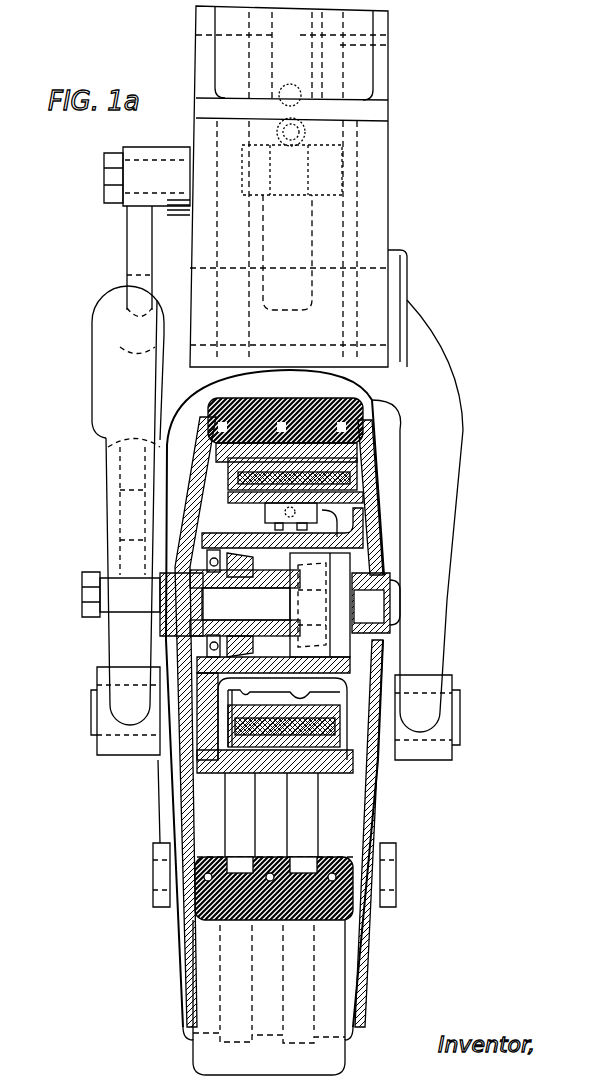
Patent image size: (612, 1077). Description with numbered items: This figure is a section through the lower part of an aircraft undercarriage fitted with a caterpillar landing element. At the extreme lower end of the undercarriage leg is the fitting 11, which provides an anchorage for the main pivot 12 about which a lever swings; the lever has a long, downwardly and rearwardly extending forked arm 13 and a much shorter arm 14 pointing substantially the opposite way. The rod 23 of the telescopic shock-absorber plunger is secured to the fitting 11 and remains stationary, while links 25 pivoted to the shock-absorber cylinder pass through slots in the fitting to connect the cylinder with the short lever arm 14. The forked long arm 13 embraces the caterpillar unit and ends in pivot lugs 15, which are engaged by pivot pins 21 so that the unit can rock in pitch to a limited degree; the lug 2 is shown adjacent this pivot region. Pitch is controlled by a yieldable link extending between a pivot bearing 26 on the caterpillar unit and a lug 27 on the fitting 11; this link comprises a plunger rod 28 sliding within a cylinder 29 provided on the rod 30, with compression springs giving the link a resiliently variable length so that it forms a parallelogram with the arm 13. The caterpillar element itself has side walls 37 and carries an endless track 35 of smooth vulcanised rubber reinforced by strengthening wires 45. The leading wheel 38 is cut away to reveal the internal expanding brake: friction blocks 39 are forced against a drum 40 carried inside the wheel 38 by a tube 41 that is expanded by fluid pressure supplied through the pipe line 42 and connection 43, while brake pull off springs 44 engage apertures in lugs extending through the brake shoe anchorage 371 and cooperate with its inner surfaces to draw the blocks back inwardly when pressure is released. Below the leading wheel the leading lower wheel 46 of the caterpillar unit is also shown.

The fitting 11 is at (375, 119).
The main pivot 12 is at (402, 292).
The long lever arm 13 is at (120, 634).
The short lever arm 14 is at (300, 212).
The pivot lug 15 is at (122, 745).
The clevis lug 2 is at (94, 712).
The pivot pin 21 is at (457, 730).
The plunger rod 23 is at (208, 38).
The link 25 is at (388, 42).
The pivot bearing 26 is at (167, 566).
The lug 27 is at (172, 227).
The plunger rod 28 is at (142, 250).
The cylinder 29 is at (95, 348).
The rod 30 is at (130, 507).
The endless track 35 is at (362, 425).
The side wall 37 is at (183, 790).
The brake shoe anchorage 371 is at (373, 710).
The leading wheel 38 is at (213, 510).
The friction block 39 is at (373, 472).
The drum 40 is at (370, 460).
The tube 41 is at (373, 488).
The pipe line 42 is at (345, 533).
The connection 43 is at (235, 538).
The brake pull off spring 44 is at (353, 742).
The strengthening wire 45 is at (362, 400).
The leading lower wheel 46 is at (372, 838).